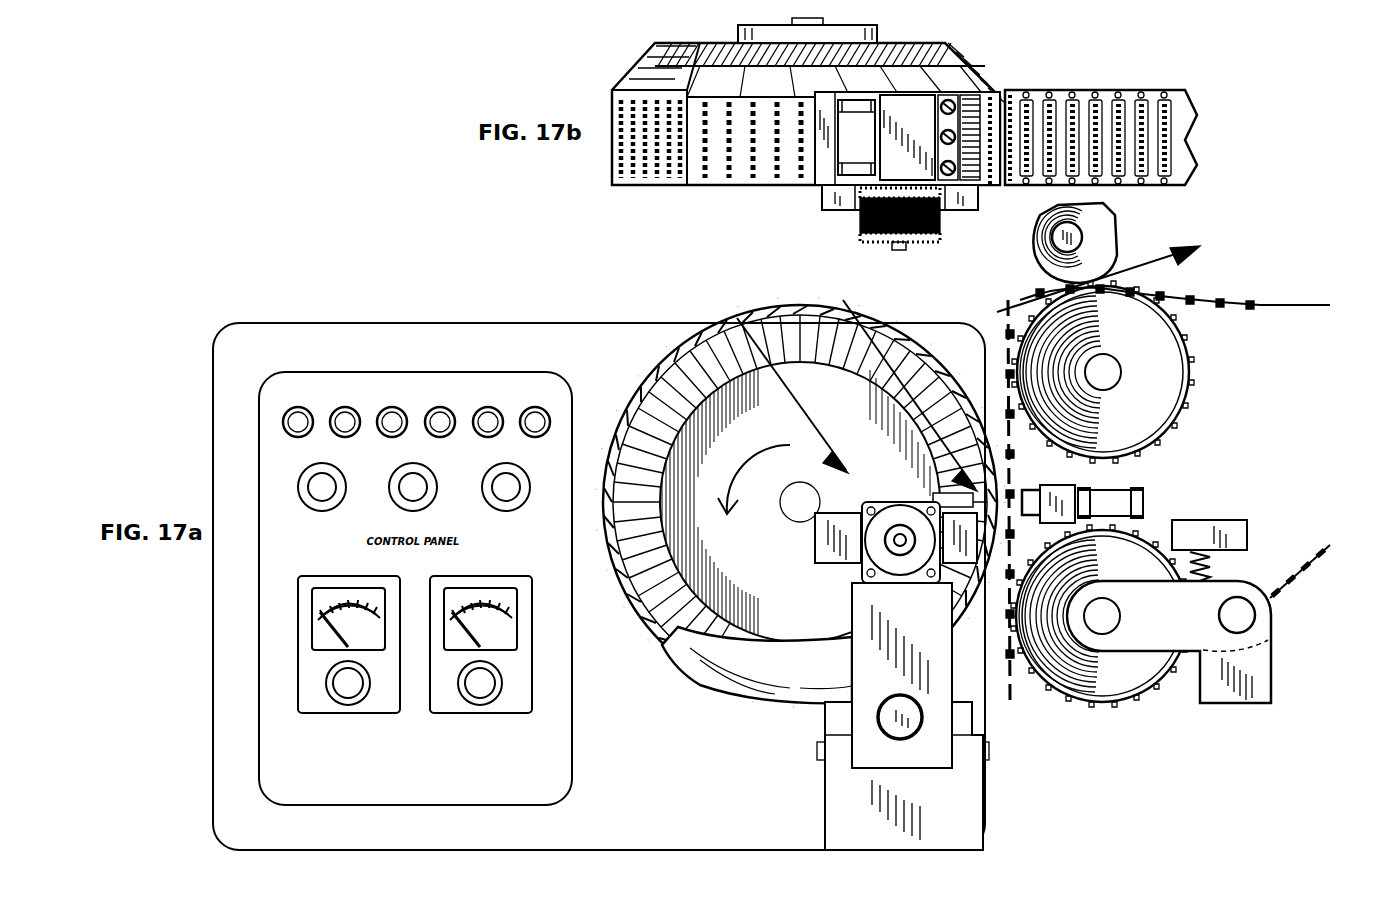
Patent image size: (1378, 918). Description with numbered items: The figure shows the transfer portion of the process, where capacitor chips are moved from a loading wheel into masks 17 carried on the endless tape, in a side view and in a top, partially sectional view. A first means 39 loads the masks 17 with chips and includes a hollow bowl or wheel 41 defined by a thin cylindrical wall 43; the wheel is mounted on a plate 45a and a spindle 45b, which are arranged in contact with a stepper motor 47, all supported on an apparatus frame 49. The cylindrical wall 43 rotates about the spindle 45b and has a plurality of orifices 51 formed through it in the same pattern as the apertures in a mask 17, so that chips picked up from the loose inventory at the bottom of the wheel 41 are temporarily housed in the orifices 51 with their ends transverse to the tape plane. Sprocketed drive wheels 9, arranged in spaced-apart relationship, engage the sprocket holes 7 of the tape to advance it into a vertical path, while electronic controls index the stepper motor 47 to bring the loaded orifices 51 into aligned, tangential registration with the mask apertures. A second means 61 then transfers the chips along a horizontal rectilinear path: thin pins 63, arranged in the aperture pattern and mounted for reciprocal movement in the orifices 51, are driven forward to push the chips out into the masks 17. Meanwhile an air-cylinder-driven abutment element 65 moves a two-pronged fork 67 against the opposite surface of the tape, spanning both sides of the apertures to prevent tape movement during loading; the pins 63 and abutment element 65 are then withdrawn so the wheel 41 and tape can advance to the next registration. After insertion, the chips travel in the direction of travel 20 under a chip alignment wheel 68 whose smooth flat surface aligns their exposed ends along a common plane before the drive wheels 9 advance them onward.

In FIG. 17A, the sprocket holes 7 is at (1070, 702).
In FIG. 17A, the sprocketed drive wheels 9 is at (1160, 393).
In FIG. 17A, the masks 17 is at (1300, 590).
In FIG. 17A, the direction of travel 20 is at (1115, 275).
In FIG. 17A, the first means 39 is at (737, 321).
In FIG. 17A, the hollow wheel 41 is at (660, 633).
In FIG. 17A, the cylindrical wall 43 is at (683, 350).
In FIG. 17B, the plate 45a is at (950, 50).
In FIG. 17B, the spindle 45b is at (764, 34).
In FIG. 17B, the stepper motor 47 is at (868, 244).
In FIG. 17A, the apparatus frame 49 is at (838, 782).
In FIG. 17A, the orifices 51 is at (600, 452).
In FIG. 17A, the second means 61 is at (846, 318).
In FIG. 17A, the pins 63 is at (1006, 523).
In FIG. 17A, the abutment element 65 is at (1062, 482).
In FIG. 17A, the two-pronged fork 67 is at (1026, 490).
In FIG. 17A, the chip alignment wheel 68 is at (1090, 220).